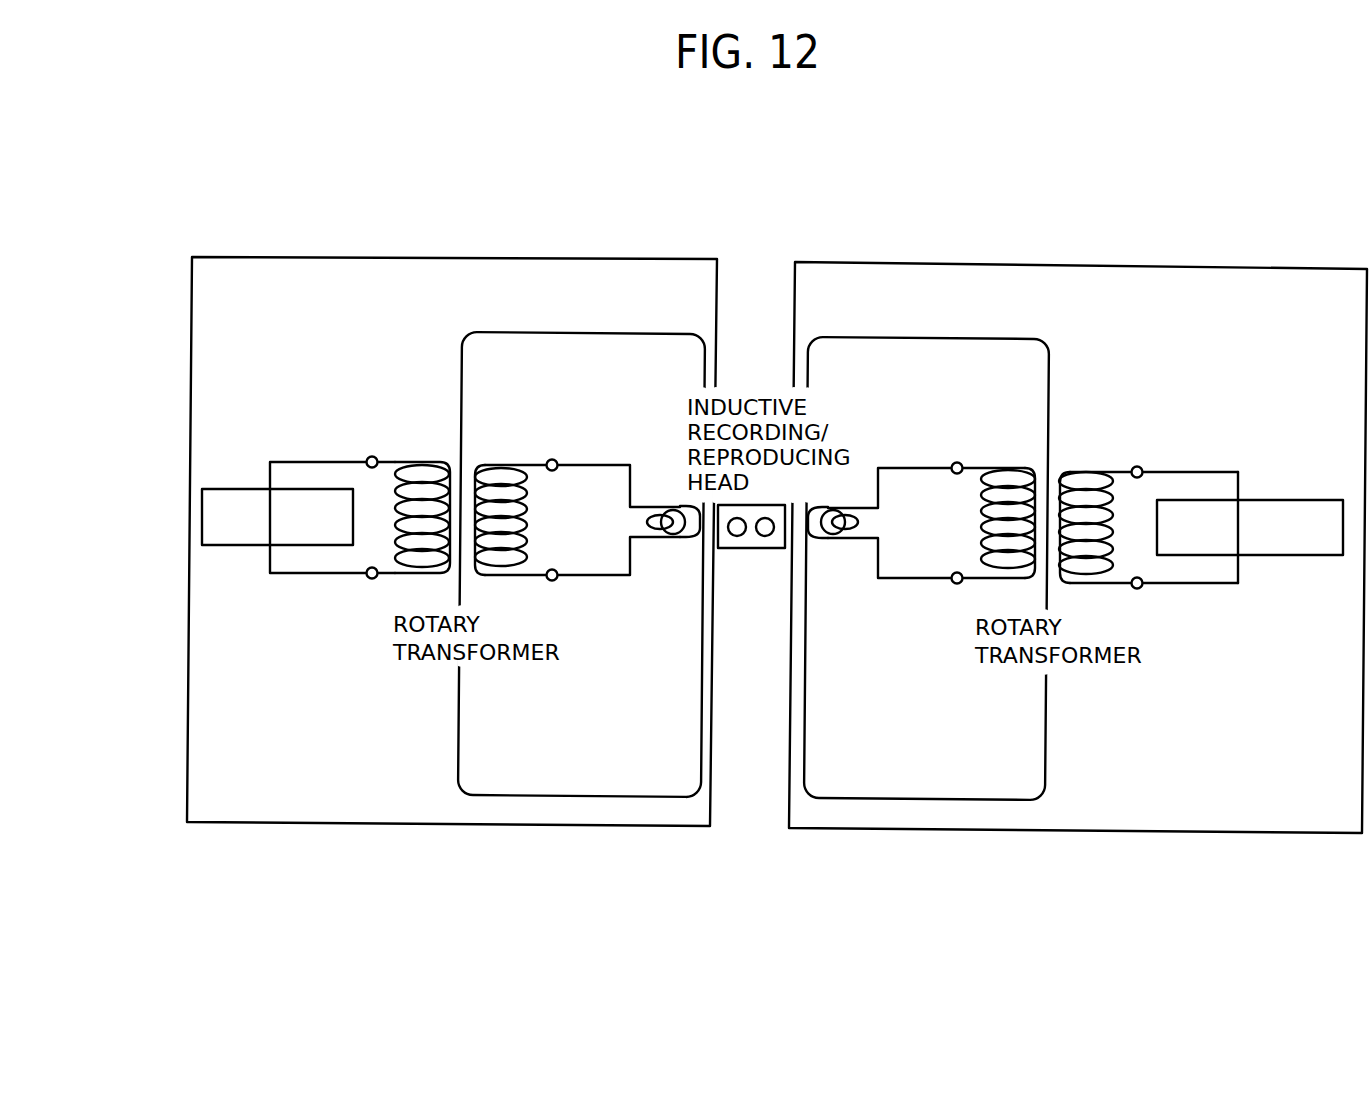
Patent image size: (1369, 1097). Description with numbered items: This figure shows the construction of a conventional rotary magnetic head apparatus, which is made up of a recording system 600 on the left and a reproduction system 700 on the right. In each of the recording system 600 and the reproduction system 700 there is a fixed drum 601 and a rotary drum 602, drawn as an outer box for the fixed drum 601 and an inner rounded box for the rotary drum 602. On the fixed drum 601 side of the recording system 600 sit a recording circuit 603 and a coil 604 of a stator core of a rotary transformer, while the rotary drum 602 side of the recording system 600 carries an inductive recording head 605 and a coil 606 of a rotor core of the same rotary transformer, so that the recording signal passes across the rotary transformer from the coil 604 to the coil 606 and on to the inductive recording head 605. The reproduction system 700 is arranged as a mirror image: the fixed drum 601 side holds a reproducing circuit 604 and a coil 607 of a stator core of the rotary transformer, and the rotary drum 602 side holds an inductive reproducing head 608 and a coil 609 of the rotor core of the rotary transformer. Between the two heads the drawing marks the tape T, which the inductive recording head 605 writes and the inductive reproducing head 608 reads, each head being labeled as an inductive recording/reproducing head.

The recording system 600 is at (420, 258).
The reproduction system 700 is at (1052, 262).
The fixed drum 601 is at (300, 618).
The rotary drum 602 is at (623, 333).
The recording circuit 603 is at (232, 489).
The coil of stator core of rotary transformer 604 is at (422, 472).
The inductive recording head 605 is at (682, 536).
The coil of rotor core of rotary transformer 606 is at (492, 470).
The coil of stator core of rotary transformer 607 is at (1090, 478).
The inductive reproducing head 608 is at (823, 538).
The coil of rotor core of rotary transformer 609 is at (1010, 470).
The magnetic tape T is at (748, 566).